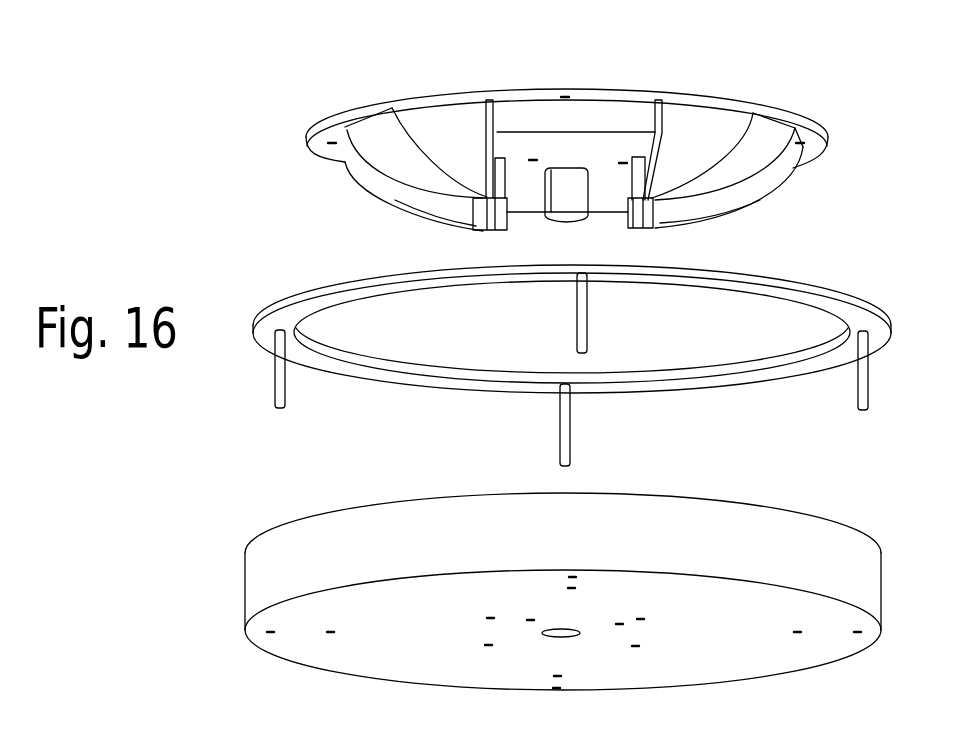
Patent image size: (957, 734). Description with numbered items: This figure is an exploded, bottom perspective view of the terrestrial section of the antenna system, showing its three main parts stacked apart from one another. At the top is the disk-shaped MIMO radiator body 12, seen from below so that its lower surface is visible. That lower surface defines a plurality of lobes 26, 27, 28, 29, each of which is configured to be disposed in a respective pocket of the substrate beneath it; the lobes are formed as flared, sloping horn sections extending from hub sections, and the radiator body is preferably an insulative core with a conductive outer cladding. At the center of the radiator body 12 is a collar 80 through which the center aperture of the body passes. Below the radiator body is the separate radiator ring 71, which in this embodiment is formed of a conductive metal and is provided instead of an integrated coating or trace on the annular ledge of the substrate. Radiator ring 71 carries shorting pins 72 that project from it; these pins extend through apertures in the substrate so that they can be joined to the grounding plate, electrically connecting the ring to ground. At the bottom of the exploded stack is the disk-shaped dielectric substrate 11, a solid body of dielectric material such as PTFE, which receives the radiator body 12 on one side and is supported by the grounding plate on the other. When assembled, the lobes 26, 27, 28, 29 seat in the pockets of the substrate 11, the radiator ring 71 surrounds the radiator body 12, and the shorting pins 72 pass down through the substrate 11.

The dielectric substrate 11 is at (238, 586).
The MIMO radiator body 12 is at (778, 86).
The lobe 26 is at (385, 148).
The lobe 27 is at (405, 213).
The lobe 28 is at (708, 213).
The lobe 29 is at (693, 117).
The radiator ring 71 is at (840, 292).
The shorting pins 72 is at (285, 388).
The collar 80 is at (588, 193).